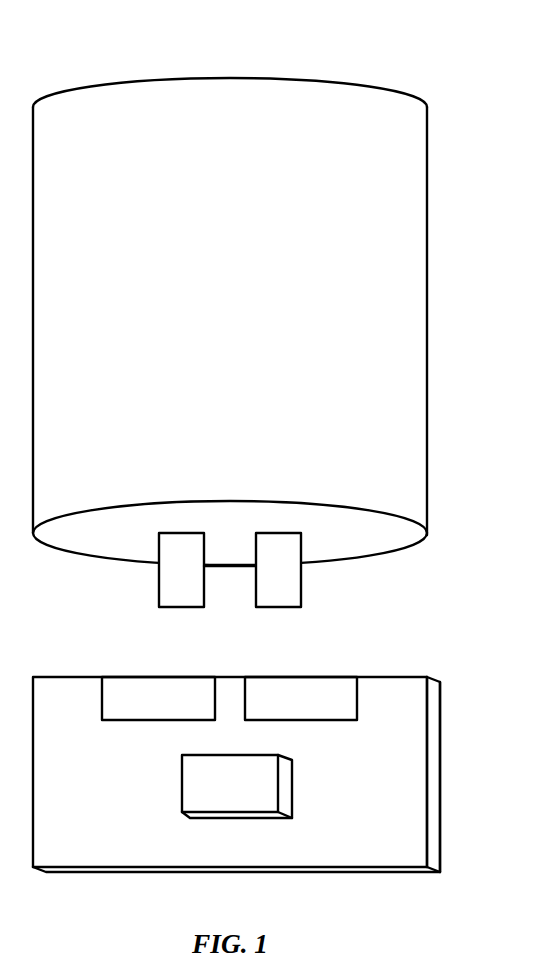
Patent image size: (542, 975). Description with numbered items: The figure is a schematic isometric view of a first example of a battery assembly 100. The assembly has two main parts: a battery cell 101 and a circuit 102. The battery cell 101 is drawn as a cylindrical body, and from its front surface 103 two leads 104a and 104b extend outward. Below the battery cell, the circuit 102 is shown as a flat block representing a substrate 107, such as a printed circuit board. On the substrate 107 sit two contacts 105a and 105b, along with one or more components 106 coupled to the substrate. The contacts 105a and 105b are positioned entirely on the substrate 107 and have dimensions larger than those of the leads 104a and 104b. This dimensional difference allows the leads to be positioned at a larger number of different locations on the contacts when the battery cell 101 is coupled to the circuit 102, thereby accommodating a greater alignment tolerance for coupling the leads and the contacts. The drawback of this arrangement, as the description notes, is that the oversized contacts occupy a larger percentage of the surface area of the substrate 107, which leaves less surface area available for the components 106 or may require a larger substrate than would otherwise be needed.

The battery assembly 100 is at (437, 49).
The battery cell 101 is at (428, 313).
The circuit 102 is at (441, 854).
The front surface 103 is at (405, 539).
The lead 104a is at (158, 577).
The lead 104b is at (303, 577).
The contact 105a is at (158, 683).
The contact 105b is at (300, 683).
The component 106 is at (233, 812).
The substrate 107 is at (434, 760).